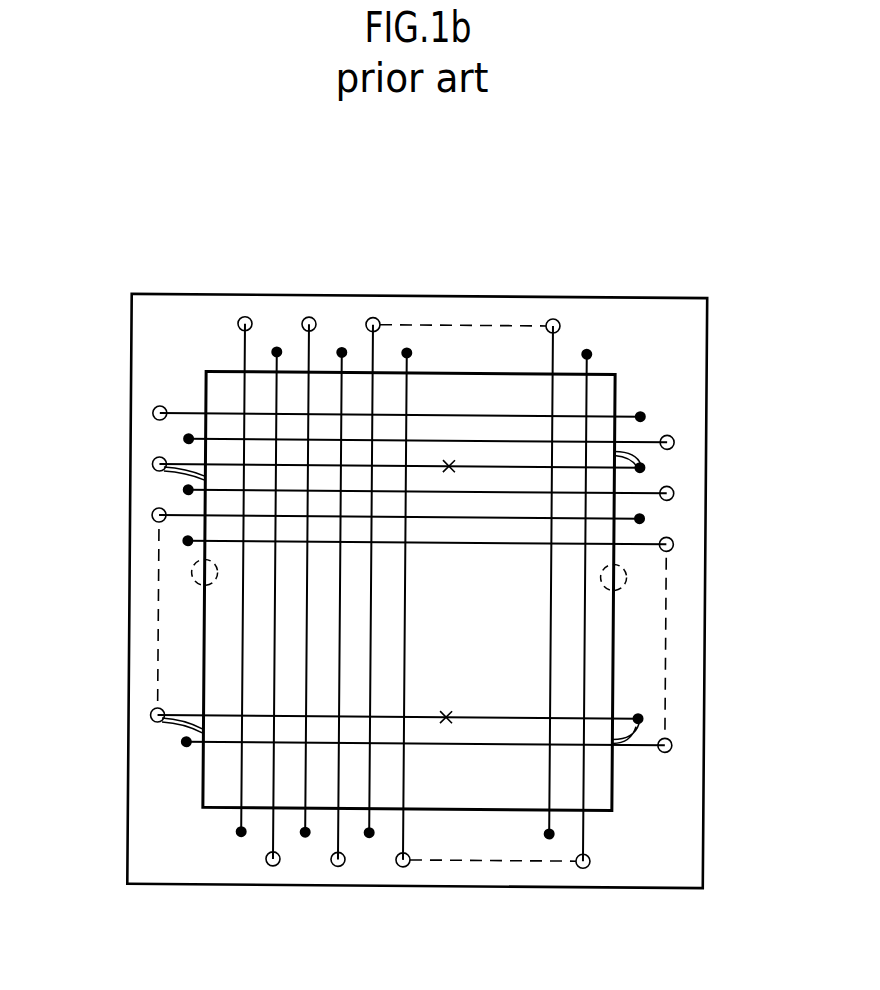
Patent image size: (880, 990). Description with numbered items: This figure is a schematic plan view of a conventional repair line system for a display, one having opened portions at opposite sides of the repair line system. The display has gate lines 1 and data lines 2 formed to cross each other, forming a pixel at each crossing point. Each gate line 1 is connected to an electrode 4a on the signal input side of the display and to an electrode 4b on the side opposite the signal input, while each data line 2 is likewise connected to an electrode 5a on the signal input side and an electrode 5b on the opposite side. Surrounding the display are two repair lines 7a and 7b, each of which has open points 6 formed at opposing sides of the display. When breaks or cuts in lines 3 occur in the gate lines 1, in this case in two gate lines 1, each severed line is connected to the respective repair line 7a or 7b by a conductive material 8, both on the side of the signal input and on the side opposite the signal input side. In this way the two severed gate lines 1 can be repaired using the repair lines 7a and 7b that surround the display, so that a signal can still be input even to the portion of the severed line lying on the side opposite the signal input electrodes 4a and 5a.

The gate lines 1 is at (532, 462).
The data lines 2 is at (307, 678).
The breaks or cuts in lines 3 is at (448, 460).
The electrode 4a is at (674, 494).
The electrode 4b is at (152, 462).
The electrode 5a is at (337, 868).
The electrode 5b is at (309, 318).
The open points 6 is at (190, 576).
The repair line 7a is at (607, 370).
The repair line 7b is at (617, 793).
The conductive material 8 is at (170, 477).